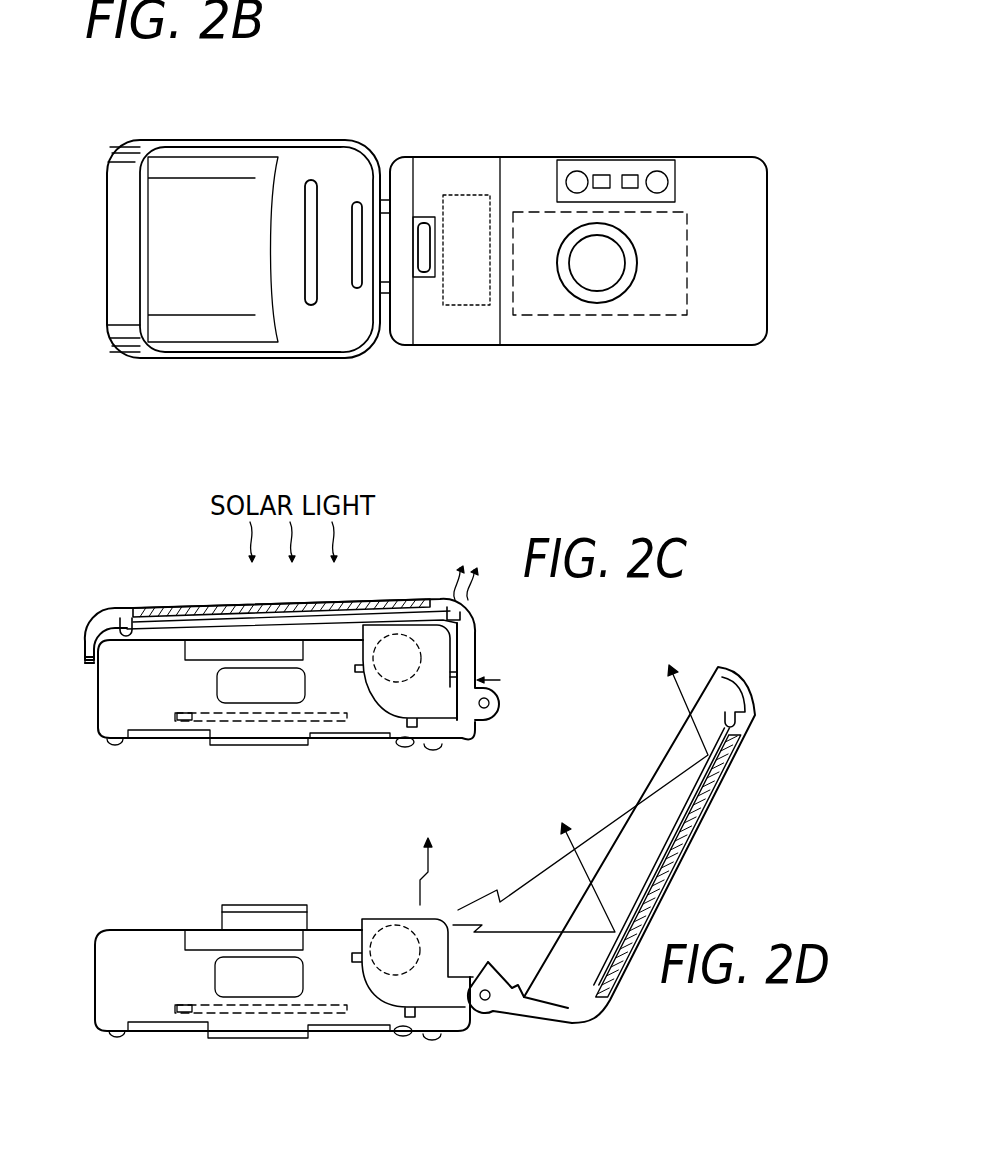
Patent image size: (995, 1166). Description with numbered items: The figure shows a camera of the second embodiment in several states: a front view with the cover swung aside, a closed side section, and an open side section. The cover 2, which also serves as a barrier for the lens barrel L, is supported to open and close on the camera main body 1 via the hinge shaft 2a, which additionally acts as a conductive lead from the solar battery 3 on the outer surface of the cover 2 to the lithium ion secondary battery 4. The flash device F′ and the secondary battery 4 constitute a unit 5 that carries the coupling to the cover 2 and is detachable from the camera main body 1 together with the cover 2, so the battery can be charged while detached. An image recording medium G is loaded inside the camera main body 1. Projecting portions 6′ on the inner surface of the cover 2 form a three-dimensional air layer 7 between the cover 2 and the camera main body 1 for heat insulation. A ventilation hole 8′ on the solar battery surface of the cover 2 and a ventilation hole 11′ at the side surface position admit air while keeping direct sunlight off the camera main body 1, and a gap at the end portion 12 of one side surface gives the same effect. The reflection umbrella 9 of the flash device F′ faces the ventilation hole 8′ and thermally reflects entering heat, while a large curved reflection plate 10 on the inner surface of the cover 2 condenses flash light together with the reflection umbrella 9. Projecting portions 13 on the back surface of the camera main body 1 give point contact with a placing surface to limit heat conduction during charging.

In FIG. 2B, the camera main body 1 is at (760, 247).
In FIG. 2C, the camera main body 1 is at (286, 692).
In FIG. 2D, the camera main body 1 is at (282, 984).
In FIG. 2B, the cover 2 is at (140, 150).
In FIG. 2D, the cover 2 is at (639, 845).
In FIG. 2C, the hinge shaft 2a is at (500, 703).
In FIG. 2D, the hinge shaft 2a is at (520, 992).
In FIG. 2B, the solar battery 3 is at (591, 0).
In FIG. 2C, the solar battery 3 is at (228, 607).
In FIG. 2D, the solar battery 3 is at (668, 866).
In FIG. 2B, the lithium ion secondary battery 4 is at (460, 205).
In FIG. 2C, the lithium ion secondary battery 4 is at (393, 670).
In FIG. 2B, the unit 5 is at (487, 333).
In FIG. 2C, the projecting portions 6′ is at (127, 628).
In FIG. 2C, the air layer 7 is at (340, 628).
In FIG. 2B, the ventilation hole 8′ is at (308, 185).
In FIG. 2C, the ventilation hole 8′ is at (460, 611).
In FIG. 2B, the reflection umbrella 9 is at (427, 280).
In FIG. 2D, the reflection umbrella 9 is at (443, 918).
In FIG. 2B, the reflection plate 10 is at (208, 295).
In FIG. 2C, the reflection plate 10 is at (395, 613).
In FIG. 2D, the reflection plate 10 is at (618, 813).
In FIG. 2B, the ventilation hole 11′ is at (356, 205).
In FIG. 2C, the ventilation hole 11′ is at (478, 673).
In FIG. 2C, the end portion 12 is at (88, 676).
In FIG. 2C, the projecting portions 13 is at (115, 750).
In FIG. 2D, the projecting portions 13 is at (120, 1040).
In FIG. 2B, the flash device F′ is at (425, 215).
In FIG. 2B, the image recording medium G is at (687, 228).
In FIG. 2C, the image recording medium G is at (190, 722).
In FIG. 2D, the image recording medium G is at (178, 1013).
In FIG. 2B, the lens barrel L is at (607, 277).
In FIG. 2D, the lens barrel L is at (263, 920).